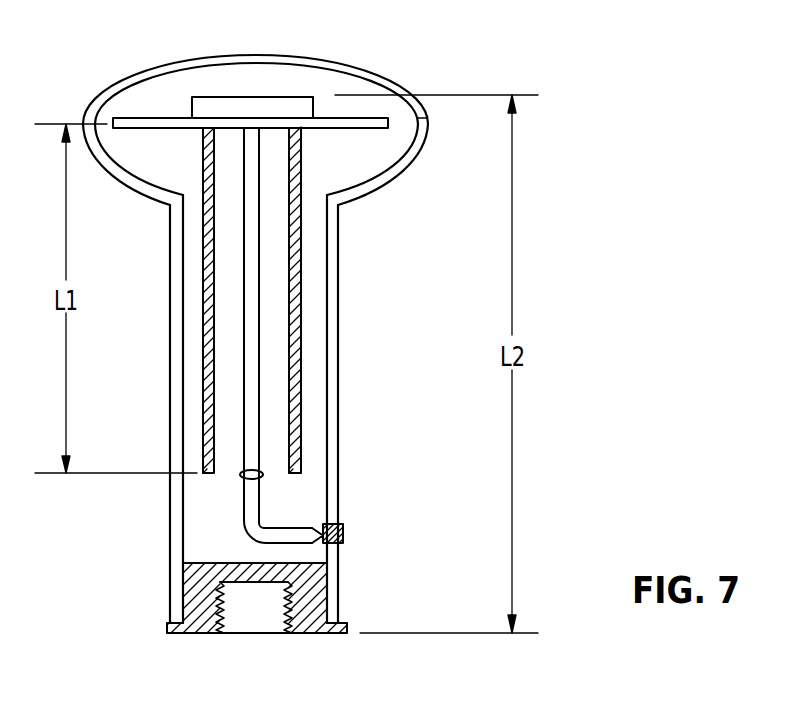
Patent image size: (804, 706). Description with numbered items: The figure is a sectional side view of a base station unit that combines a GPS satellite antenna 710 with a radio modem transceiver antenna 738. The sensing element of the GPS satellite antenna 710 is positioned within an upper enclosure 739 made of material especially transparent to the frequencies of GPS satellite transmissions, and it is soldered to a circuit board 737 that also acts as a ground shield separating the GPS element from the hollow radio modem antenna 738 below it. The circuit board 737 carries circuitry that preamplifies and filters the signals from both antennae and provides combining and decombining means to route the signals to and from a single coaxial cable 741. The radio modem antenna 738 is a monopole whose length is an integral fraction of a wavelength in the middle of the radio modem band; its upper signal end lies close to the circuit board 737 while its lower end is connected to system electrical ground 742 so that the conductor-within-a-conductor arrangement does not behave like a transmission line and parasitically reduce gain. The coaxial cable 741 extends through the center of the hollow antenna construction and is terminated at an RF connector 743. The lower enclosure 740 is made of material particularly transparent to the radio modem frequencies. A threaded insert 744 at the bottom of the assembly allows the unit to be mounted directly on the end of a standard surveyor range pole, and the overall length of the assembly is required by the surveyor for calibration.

The GPS satellite antenna 710 is at (293, 97).
The circuit board 737 is at (367, 129).
The radio modem transceiver antenna 738 is at (300, 310).
The enclosure 739 is at (240, 55).
The enclosure 740 is at (332, 373).
The coaxial cable 741 is at (253, 513).
The system electrical ground 742 is at (260, 475).
The RF connector 743 is at (345, 533).
The threaded insert 744 is at (198, 623).